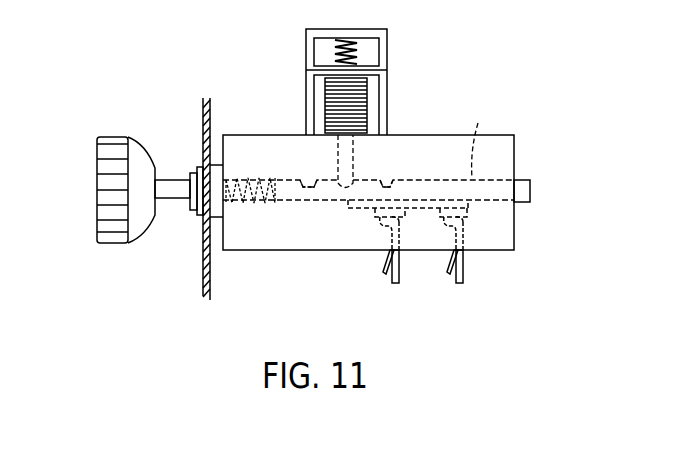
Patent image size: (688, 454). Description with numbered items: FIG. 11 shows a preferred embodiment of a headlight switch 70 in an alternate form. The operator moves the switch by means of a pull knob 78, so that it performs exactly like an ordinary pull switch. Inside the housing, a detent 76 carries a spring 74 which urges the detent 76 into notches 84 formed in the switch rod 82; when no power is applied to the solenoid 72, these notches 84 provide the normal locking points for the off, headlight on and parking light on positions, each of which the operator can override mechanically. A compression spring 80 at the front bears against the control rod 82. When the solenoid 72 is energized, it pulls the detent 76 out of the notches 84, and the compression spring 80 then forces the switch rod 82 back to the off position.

The switch 70 is at (537, 232).
The solenoid 72 is at (365, 102).
The spring 74 is at (360, 53).
The detent 76 is at (357, 153).
The pull knob 78 is at (96, 177).
The compression spring 80 is at (243, 168).
The switch rod 82 is at (485, 141).
The notches 84 is at (345, 187).